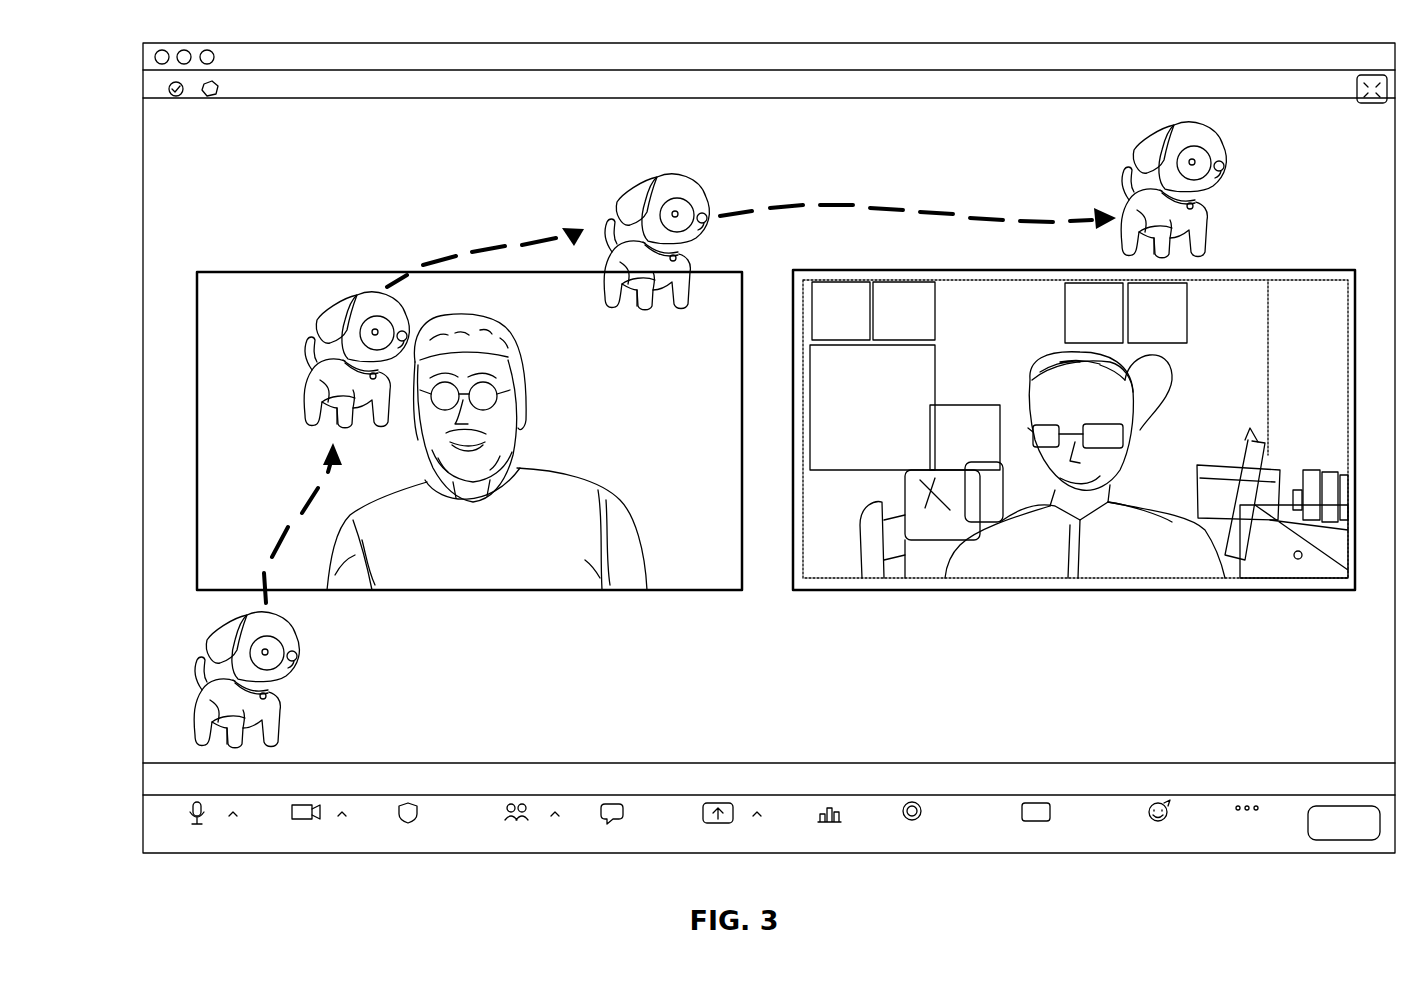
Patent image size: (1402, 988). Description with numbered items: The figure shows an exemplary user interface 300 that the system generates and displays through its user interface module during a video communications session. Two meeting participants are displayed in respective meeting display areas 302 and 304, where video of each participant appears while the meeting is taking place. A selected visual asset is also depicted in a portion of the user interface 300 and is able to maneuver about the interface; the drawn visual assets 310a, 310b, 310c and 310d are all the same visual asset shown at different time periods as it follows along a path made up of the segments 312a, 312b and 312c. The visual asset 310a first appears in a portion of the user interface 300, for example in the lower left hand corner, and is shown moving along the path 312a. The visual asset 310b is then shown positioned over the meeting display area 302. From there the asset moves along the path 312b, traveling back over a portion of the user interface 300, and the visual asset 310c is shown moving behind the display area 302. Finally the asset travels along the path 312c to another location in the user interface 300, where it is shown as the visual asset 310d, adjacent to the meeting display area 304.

The user interface 300 is at (177, 38).
The meeting display area 302 is at (718, 340).
The meeting display area 304 is at (1326, 337).
The visual asset 310a is at (303, 668).
The visual asset 310b is at (313, 318).
The visual asset 310c is at (707, 198).
The visual asset 310d is at (1227, 163).
The path 312a is at (305, 498).
The path 312b is at (482, 250).
The path 312c is at (930, 212).